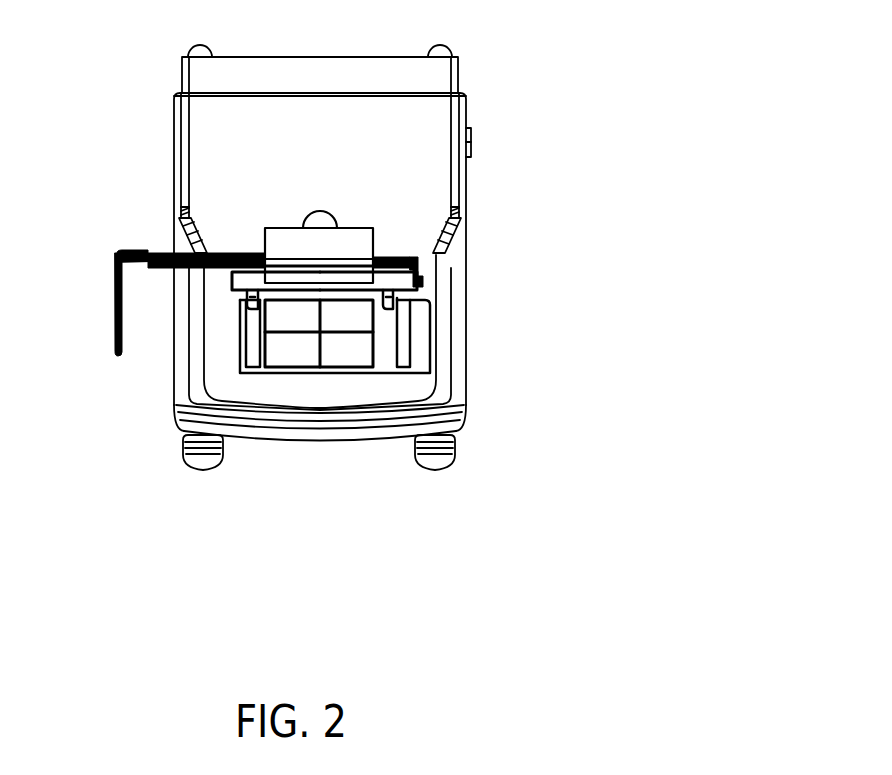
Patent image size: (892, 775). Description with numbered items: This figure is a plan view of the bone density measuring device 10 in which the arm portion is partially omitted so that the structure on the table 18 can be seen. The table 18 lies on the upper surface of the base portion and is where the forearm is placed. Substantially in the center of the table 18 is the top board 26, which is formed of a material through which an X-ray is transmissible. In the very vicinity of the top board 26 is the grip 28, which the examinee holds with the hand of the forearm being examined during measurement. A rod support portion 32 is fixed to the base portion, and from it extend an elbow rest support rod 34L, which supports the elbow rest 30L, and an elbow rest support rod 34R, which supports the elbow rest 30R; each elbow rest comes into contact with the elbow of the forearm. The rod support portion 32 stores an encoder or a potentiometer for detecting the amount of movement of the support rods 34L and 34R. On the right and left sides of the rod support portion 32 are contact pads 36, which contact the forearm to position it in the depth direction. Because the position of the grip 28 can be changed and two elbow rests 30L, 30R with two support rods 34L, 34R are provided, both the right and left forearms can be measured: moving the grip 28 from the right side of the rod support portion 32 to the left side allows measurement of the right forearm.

The vehicle 10 is at (500, 82).
The table 18 is at (440, 363).
The top board 26 is at (290, 347).
The grip 28 is at (408, 317).
The elbow rest 30L is at (117, 303).
The elbow rest 30R is at (423, 282).
The rod support portion 32 is at (360, 245).
The elbow rest support rod 34L is at (163, 257).
The elbow rest support rod 34R is at (163, 262).
The contact pads 36 is at (258, 300).